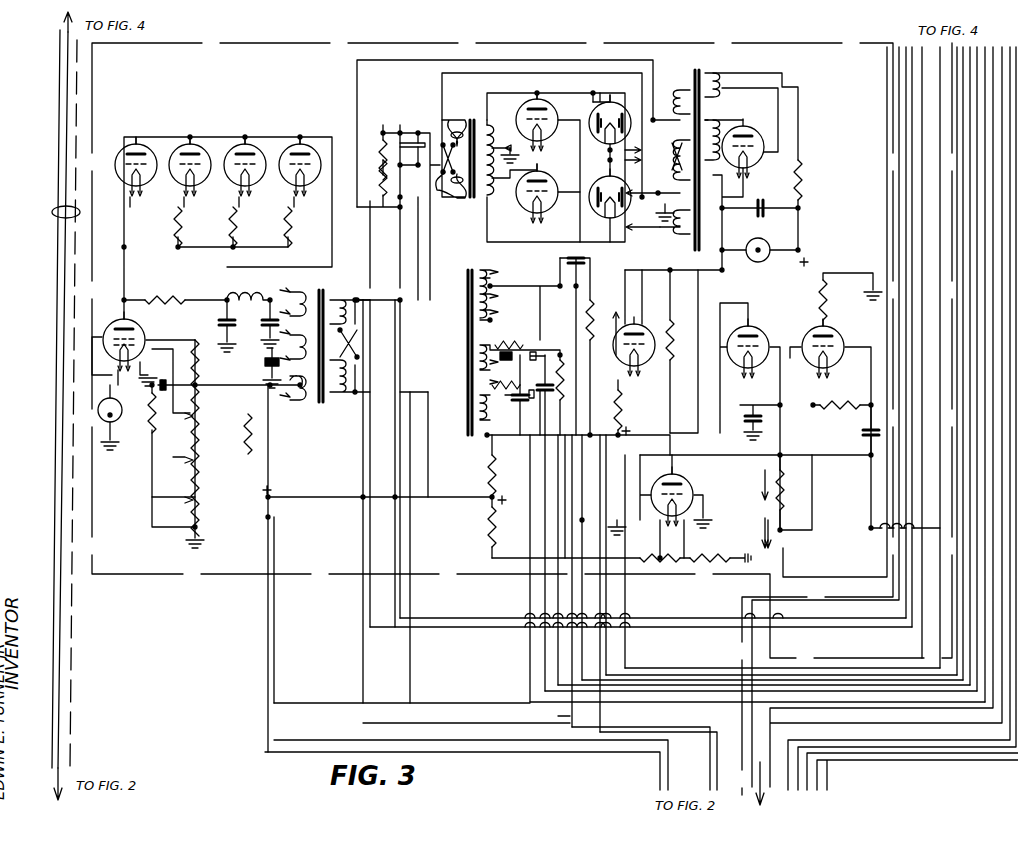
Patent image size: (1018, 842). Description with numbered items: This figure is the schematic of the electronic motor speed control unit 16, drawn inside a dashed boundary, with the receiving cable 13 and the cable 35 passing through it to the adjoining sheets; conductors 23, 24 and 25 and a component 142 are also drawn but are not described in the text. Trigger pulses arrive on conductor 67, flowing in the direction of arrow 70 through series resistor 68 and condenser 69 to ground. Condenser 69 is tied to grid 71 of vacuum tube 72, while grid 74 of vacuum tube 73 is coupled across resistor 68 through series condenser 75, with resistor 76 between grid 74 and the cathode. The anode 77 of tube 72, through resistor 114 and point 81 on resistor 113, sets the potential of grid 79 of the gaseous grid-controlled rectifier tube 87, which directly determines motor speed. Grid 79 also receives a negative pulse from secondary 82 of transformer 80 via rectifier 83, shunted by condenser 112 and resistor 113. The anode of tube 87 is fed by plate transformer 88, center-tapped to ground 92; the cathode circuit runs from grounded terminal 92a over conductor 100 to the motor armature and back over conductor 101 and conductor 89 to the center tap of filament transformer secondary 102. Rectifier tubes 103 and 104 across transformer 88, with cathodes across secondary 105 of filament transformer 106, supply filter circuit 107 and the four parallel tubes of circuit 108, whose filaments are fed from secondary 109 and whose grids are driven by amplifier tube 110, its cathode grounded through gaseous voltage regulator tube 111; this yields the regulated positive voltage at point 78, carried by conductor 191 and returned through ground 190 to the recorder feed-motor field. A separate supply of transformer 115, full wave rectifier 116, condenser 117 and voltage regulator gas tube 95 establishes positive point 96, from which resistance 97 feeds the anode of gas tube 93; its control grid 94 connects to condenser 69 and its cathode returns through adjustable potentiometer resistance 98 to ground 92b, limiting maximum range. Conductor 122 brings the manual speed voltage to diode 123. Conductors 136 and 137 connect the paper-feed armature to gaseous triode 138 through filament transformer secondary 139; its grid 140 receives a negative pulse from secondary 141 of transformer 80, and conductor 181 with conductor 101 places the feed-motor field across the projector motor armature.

The receiving cable 13 is at (52, 211).
The electronic motor speed control unit 16 is at (126, 574).
The conductor 23 is at (780, 748).
The conductor 24 is at (920, 70).
The conductor 25 is at (928, 97).
The cable 35 is at (905, 55).
The conductor 67 is at (955, 142).
The series resistor 68 is at (795, 472).
The condenser 69 is at (745, 416).
The arrow 70 is at (762, 500).
The grid 71 is at (740, 335).
The vacuum tube 72 is at (743, 416).
The vacuum tube 73 is at (813, 338).
The grid 74 is at (842, 335).
The series condenser 75 is at (864, 434).
The resistor 76 is at (840, 412).
The anode 77 is at (757, 332).
The point 78 is at (368, 568).
The grid 79 is at (552, 120).
The transformer 80 is at (468, 420).
The point 81 is at (560, 435).
The secondary 82 is at (490, 440).
The rectifier 83 is at (507, 407).
The gaseous grid-controlled rectifier tube 87 is at (522, 113).
The plate transformer 88 is at (478, 108).
The conductor 89 is at (512, 283).
The ground 92 is at (505, 144).
The grounded terminal 92a is at (627, 517).
The ground 92b is at (758, 535).
The gas tube 93 is at (690, 482).
The control grid 94 is at (668, 490).
The voltage regulator gas tube 95 is at (748, 240).
The point 96 is at (805, 250).
The resistance 97 is at (676, 314).
The adjustable potentiometer resistance 98 is at (700, 548).
The conductor 100 is at (600, 716).
The conductor 101 is at (614, 400).
The filament transformer secondary 102 is at (484, 270).
The rectifier tube 103 is at (614, 106).
The rectifier tube 104 is at (616, 218).
The secondary 105 is at (304, 286).
The filament transformer 106 is at (330, 293).
The filter circuit 107 is at (240, 326).
The circuit 108 is at (223, 294).
The secondary 109 is at (322, 400).
The amplifier tube 110 is at (118, 313).
The gaseous voltage regulator tube 111 is at (118, 428).
The condenser 112 is at (532, 440).
The resistor 113 is at (556, 445).
The resistor 114 is at (480, 466).
The transformer 115 is at (690, 92).
The full wave rectifier 116 is at (760, 160).
The condenser 117 is at (766, 214).
The conductor 122 is at (530, 640).
The diode 123 is at (628, 326).
The conductor 136 is at (605, 660).
The conductor 137 is at (570, 470).
The gaseous triode 138 is at (556, 178).
The filament transformer secondary 139 is at (466, 290).
The grid 140 is at (522, 210).
The secondary 141 is at (520, 363).
The resistor 142 is at (560, 503).
The conductor 181 is at (586, 512).
The ground 190 is at (107, 460).
The conductor 191 is at (278, 558).